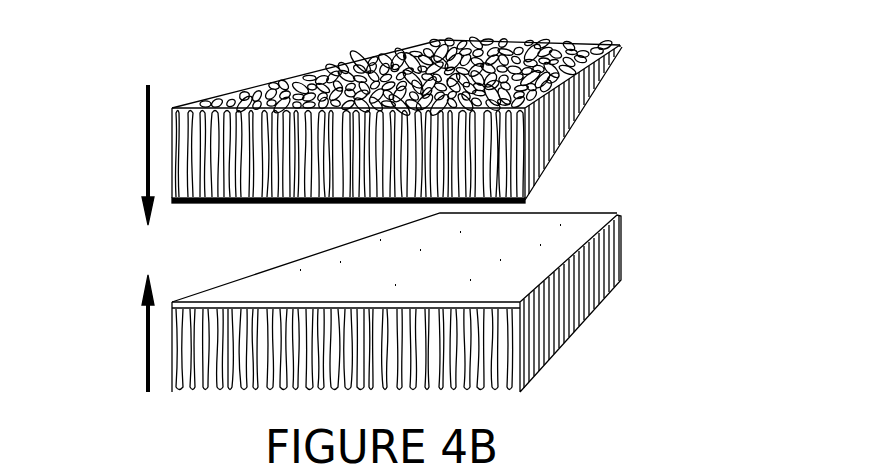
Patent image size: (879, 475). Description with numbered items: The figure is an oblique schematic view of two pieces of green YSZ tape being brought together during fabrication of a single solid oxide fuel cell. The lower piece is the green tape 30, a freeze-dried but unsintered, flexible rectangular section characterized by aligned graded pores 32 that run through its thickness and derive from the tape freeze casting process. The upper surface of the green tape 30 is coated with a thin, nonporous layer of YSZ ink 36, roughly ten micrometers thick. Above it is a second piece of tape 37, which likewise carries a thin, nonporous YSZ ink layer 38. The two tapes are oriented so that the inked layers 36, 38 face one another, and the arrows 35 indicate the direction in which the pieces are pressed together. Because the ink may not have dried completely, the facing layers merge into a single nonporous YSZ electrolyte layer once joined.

The green tape 30 is at (403, 297).
The aligned graded pores 32 is at (340, 363).
The arrows 35 is at (148, 333).
The YSZ ink layer 36 is at (550, 252).
The second piece of tape 37 is at (615, 82).
The YSZ ink layer 38 is at (595, 145).